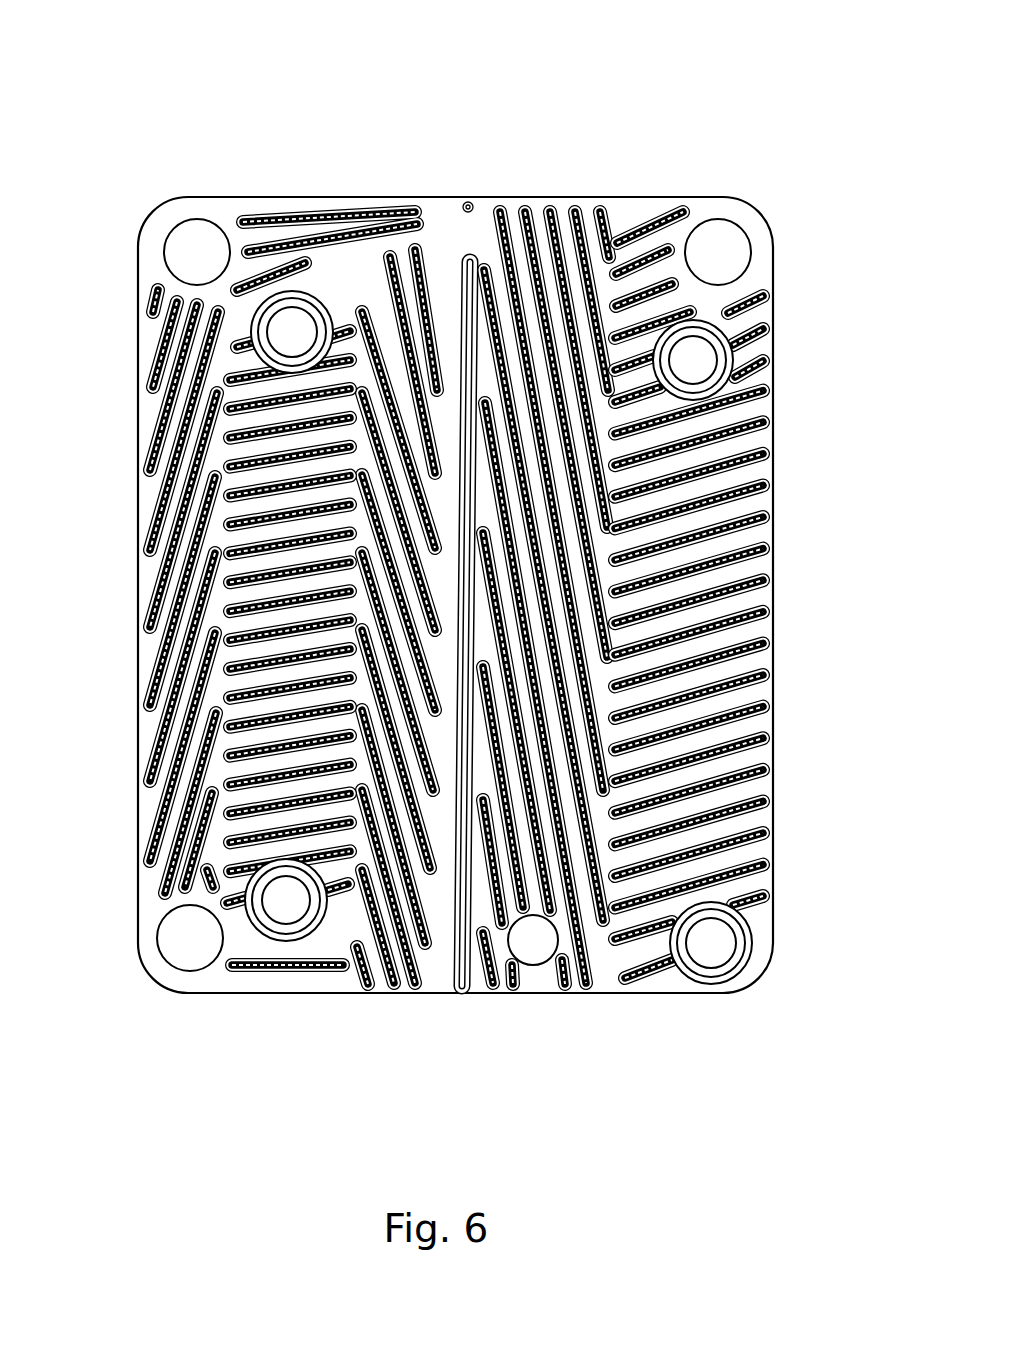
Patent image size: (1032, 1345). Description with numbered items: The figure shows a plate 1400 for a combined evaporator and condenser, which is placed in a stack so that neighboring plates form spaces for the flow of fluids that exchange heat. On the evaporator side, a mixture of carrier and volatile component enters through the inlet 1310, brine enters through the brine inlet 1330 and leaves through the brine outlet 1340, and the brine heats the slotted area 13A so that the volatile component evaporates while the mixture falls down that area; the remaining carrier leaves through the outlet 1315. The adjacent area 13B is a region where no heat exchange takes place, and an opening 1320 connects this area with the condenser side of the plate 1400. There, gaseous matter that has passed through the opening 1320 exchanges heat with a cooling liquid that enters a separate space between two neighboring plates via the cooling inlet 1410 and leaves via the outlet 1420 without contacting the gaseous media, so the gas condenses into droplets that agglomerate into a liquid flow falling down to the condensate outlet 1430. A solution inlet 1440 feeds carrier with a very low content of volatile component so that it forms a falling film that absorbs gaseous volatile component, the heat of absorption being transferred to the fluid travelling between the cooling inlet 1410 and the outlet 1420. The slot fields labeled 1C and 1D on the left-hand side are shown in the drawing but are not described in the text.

The plate 1400 is at (727, 57).
The solution inlet 1440 is at (200, 219).
The outlet 1420 is at (306, 316).
The opening 1320 is at (487, 233).
The area 13B is at (541, 214).
The inlet 1310 is at (752, 232).
The brine outlet 1340 is at (718, 360).
The area 13A is at (758, 508).
The slots 1D is at (262, 553).
The slots 1C is at (145, 731).
The condensate outlet 1430 is at (181, 972).
The cooling inlet 1410 is at (318, 920).
The outlet 1315 is at (530, 962).
The brine inlet 1330 is at (733, 950).